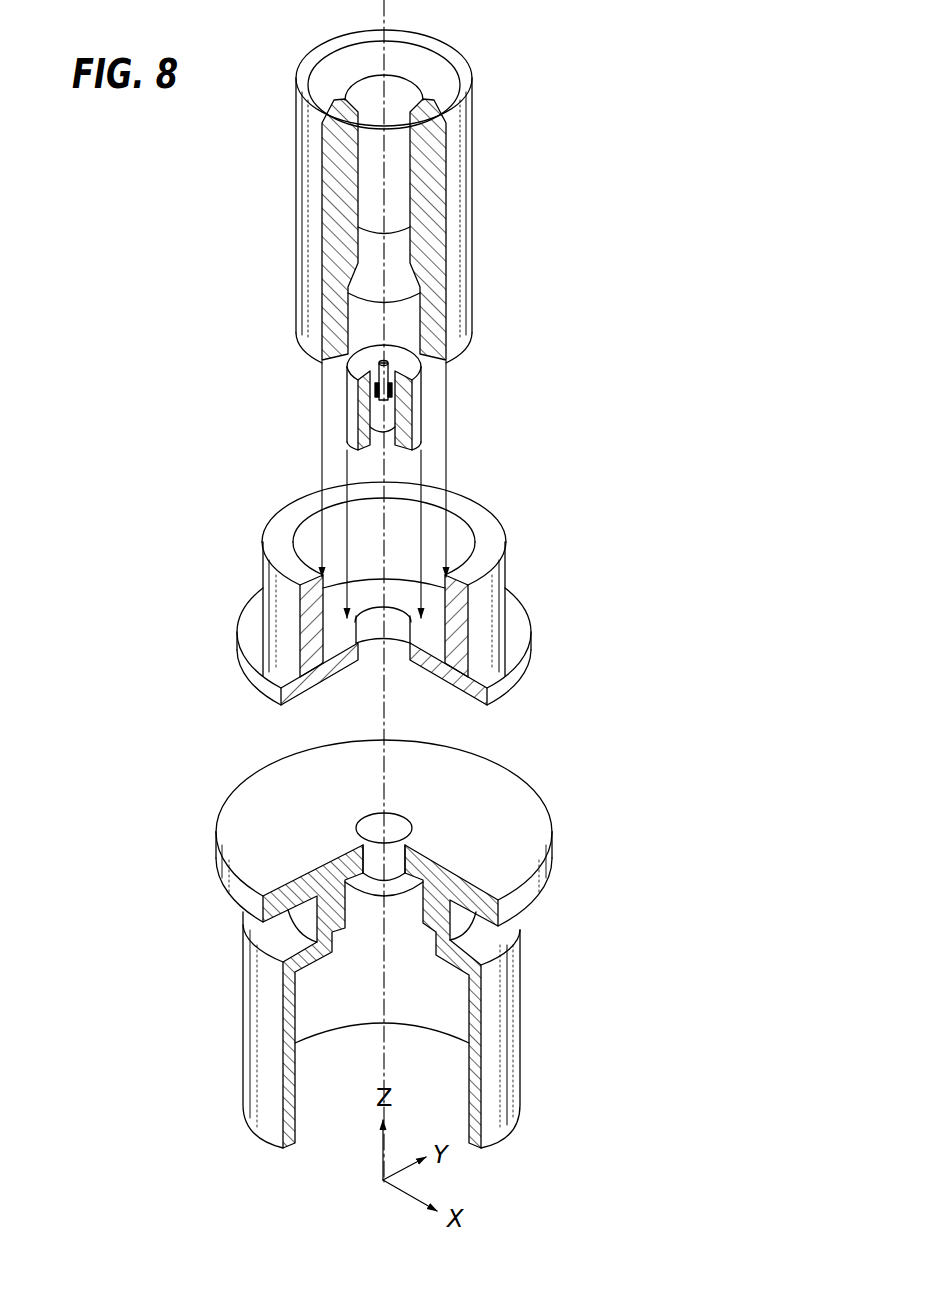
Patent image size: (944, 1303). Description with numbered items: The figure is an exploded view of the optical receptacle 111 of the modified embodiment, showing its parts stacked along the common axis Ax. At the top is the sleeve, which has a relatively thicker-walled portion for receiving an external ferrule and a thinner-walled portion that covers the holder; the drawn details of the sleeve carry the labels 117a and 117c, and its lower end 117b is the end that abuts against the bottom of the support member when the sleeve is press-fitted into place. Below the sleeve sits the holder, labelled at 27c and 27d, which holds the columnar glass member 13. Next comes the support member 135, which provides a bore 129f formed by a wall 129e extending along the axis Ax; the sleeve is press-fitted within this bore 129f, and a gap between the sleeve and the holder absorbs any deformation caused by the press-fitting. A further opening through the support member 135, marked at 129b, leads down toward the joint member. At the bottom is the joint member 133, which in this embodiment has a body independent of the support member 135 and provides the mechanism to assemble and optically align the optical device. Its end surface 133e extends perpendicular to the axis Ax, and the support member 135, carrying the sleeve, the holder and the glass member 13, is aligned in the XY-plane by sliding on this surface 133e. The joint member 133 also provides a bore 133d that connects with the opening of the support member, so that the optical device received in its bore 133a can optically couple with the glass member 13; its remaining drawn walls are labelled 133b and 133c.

The optical receptacle 111 is at (607, 172).
The upper opening of sleeve 117a is at (448, 68).
The sleeve body 117c is at (423, 172).
The end of the sleeve 117b is at (453, 355).
The columnar glass member 13 is at (377, 390).
The top surface of insert 27c is at (405, 364).
The lower portion of insert 27d is at (402, 453).
The bore 129f is at (433, 538).
The wall 129e is at (487, 610).
The support member 135 is at (280, 630).
The through hole 129b is at (372, 653).
The joint member 133 is at (258, 797).
The end surface 133e is at (523, 810).
The bore 133d is at (395, 828).
The skirt wall 133b is at (253, 1117).
The bore 133a is at (438, 1077).
The inner surface of skirt 133c is at (471, 1072).